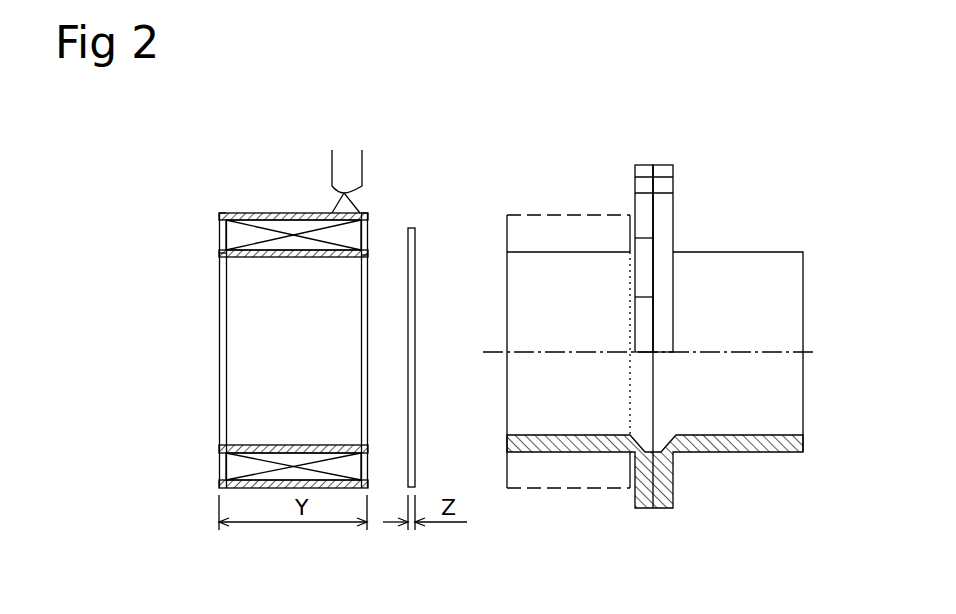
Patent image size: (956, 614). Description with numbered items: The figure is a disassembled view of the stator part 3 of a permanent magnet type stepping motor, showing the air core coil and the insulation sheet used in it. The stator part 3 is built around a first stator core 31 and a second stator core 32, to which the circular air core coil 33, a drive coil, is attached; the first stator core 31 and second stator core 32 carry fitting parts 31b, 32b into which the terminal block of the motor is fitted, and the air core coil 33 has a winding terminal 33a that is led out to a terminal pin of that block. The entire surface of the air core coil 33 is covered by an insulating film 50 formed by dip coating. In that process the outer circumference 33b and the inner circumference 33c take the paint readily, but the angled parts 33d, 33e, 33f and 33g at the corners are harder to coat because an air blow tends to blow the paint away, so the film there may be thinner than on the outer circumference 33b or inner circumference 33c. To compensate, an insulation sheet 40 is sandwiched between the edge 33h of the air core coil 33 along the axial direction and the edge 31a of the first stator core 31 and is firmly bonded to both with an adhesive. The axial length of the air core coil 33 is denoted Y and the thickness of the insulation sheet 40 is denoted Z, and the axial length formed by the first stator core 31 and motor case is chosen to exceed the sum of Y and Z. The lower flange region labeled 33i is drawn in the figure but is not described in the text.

The stator part 3 is at (780, 237).
The first stator core 31 is at (657, 510).
The edge of first stator core 31a is at (633, 193).
The fitting part of first stator core 31b is at (643, 165).
The second stator core 32 is at (675, 497).
The fitting part of second stator core 32b is at (667, 160).
The air core coil 33 is at (288, 195).
The winding terminal 33a is at (333, 153).
The outer circumference 33b is at (248, 212).
The inner circumference 33c is at (275, 262).
The angled part 33d is at (368, 213).
The angled part 33e is at (368, 255).
The angled part 33f is at (218, 254).
The angled part 33g is at (218, 212).
The edge along the axial direction 33h is at (370, 470).
The lower flange 33i is at (220, 465).
The insulation sheet 40 is at (415, 253).
The insulating film 50 is at (220, 390).